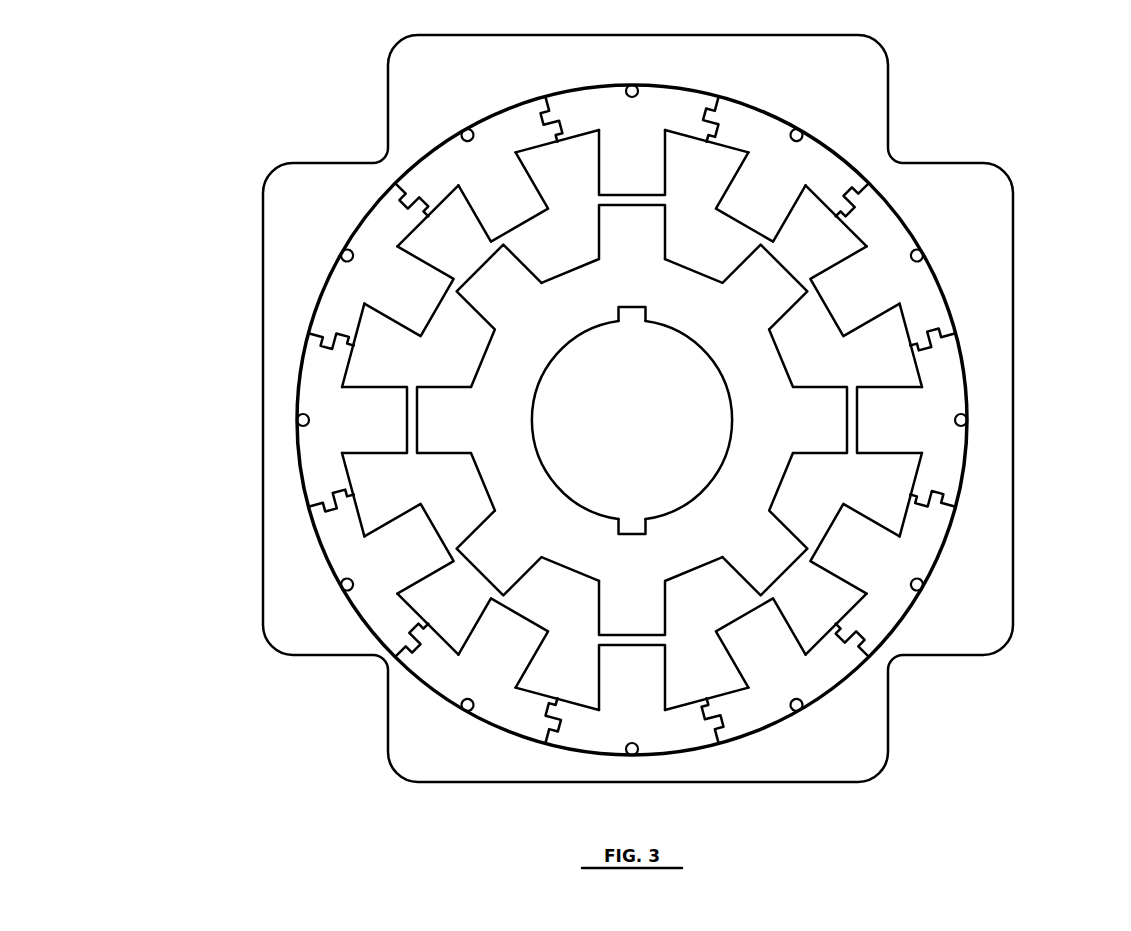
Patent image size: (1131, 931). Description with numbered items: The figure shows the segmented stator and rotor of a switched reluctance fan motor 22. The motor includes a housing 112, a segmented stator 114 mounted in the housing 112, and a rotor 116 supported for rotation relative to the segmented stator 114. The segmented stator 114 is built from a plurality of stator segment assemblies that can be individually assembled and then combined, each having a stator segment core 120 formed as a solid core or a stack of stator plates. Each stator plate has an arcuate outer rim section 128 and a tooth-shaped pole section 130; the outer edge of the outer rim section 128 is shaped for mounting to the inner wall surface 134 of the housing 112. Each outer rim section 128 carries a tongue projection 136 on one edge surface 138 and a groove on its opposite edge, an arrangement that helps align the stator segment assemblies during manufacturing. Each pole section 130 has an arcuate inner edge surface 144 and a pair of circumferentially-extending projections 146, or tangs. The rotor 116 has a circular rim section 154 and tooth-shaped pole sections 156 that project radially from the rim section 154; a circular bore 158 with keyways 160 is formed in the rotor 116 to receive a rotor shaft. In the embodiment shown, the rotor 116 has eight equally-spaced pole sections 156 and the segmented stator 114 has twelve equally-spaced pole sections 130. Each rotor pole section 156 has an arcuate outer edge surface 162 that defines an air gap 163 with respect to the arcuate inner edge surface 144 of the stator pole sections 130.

The switched reluctance fan motor 22 is at (944, 92).
The housing 112 is at (985, 195).
The segmented stator 114 is at (949, 269).
The rotor 116 is at (683, 355).
The stator segment core 120 is at (497, 130).
The arcuate outer rim section 128 is at (565, 127).
The tooth-shaped pole section 130 is at (617, 169).
The inner wall surface 134 is at (926, 258).
The tongue projection 136 is at (543, 104).
The edge surface 138 is at (700, 116).
The arcuate inner edge surface 144 is at (618, 199).
The circumferentially-extending projections 146 is at (600, 190).
The circular rim section 154 is at (740, 441).
The tooth-shaped pole sections 156 is at (478, 304).
The circular bore 158 is at (707, 483).
The keyways 160 is at (641, 312).
The arcuate outer edge surface 162 is at (480, 262).
The air gap 163 is at (681, 225).